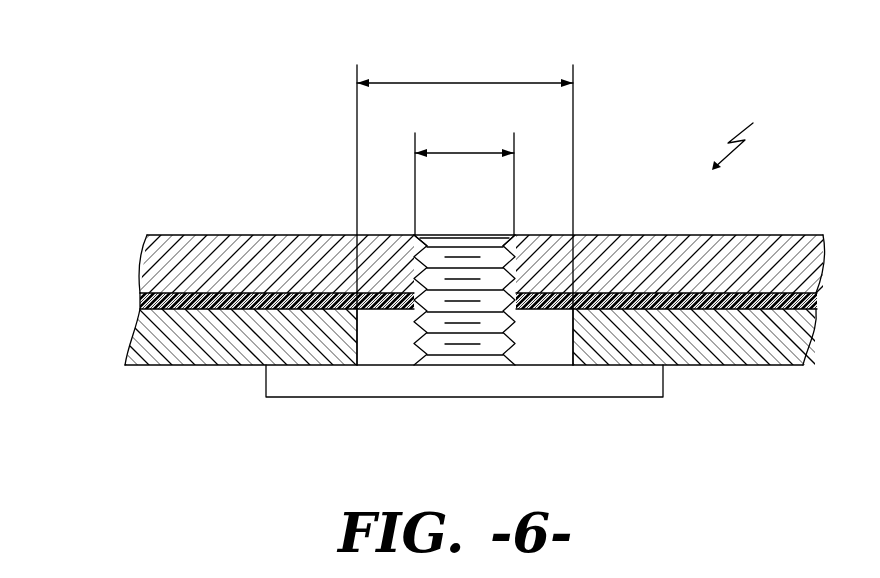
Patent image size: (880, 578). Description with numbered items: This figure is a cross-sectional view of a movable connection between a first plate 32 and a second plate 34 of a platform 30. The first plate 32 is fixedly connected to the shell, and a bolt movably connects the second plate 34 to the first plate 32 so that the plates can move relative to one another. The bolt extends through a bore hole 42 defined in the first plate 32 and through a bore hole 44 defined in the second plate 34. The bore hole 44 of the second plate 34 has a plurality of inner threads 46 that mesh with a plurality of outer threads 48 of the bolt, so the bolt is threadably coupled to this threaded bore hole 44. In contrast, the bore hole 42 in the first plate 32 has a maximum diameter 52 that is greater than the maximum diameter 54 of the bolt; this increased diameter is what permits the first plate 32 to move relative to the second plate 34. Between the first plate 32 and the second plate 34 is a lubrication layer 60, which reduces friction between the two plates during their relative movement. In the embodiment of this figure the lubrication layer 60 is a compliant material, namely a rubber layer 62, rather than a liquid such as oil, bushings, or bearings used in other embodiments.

The platform 30 is at (754, 130).
The first plate 32 is at (215, 347).
The second plate 34 is at (285, 255).
The bore hole 42 is at (540, 346).
The bore hole 44 is at (480, 232).
The inner threads 46 is at (450, 235).
The outer threads 48 is at (467, 347).
The maximum diameter 52 is at (475, 83).
The maximum diameter 54 is at (457, 153).
The lubrication layer 60 is at (136, 305).
The rubber layer 62 is at (138, 300).